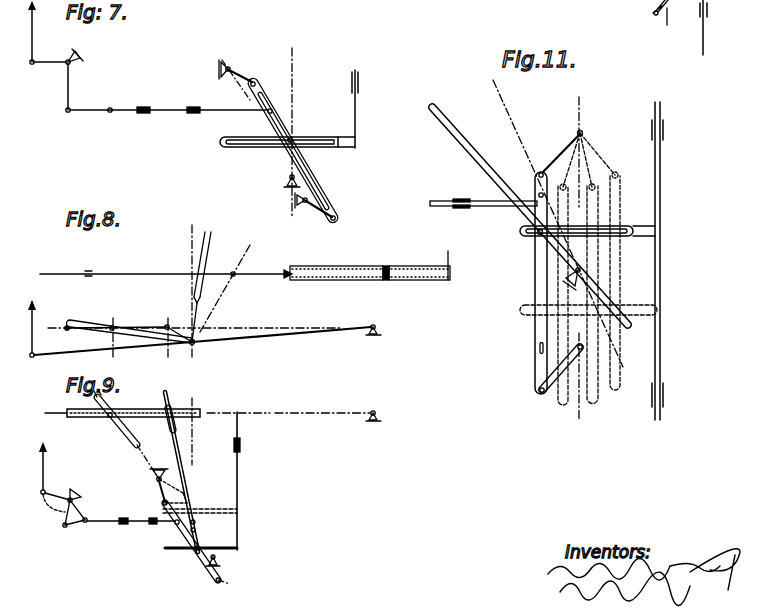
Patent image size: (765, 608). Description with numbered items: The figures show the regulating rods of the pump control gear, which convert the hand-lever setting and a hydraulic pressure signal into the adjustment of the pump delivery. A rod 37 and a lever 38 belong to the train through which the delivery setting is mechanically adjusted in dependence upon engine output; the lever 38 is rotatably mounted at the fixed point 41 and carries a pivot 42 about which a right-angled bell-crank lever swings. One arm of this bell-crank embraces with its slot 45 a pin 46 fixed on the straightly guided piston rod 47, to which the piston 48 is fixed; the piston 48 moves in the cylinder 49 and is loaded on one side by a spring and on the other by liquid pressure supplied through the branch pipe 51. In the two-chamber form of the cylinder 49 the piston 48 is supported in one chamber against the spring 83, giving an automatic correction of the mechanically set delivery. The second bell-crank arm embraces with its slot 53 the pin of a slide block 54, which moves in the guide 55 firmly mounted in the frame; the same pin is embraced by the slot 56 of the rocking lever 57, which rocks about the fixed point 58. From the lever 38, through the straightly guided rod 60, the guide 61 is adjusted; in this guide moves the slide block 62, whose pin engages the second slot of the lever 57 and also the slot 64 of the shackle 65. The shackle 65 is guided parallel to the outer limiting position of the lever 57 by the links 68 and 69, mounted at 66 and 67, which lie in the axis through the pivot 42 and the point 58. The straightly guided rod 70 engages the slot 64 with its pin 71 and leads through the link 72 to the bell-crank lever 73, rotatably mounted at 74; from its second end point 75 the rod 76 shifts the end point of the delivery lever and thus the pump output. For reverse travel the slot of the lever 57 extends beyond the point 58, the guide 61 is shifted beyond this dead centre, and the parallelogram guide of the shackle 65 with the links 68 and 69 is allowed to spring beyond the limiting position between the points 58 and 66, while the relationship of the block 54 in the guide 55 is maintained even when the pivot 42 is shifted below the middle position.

In FIG. 8, the rod 37 is at (40, 328).
In FIG. 8, the lever 38 is at (280, 338).
In FIG. 8, the mounting point 41 is at (380, 332).
In FIG. 9, the mounting point 41 is at (380, 418).
In FIG. 8, the pivot 42 is at (203, 350).
In FIG. 8, the slot 45 is at (203, 257).
In FIG. 8, the pin 46 is at (208, 273).
In FIG. 8, the piston rod 47 is at (166, 266).
In FIG. 8, the piston 48 is at (381, 282).
In FIG. 8, the cylinder 49 is at (336, 280).
In FIG. 8, the branch pipe 51 is at (447, 257).
In FIG. 8, the slot 53 is at (113, 329).
In FIG. 8, the slide block 54 is at (150, 327).
In FIG. 9, the slide block 54 is at (108, 417).
In FIG. 8, the guide 55 is at (70, 331).
In FIG. 9, the guide 55 is at (75, 417).
In FIG. 9, the slot 56 is at (176, 425).
In FIG. 9, the rocking lever 57 is at (146, 460).
In FIG. 11, the rocking lever 57 is at (470, 146).
In FIG. 7, the fixed point 58 is at (289, 177).
In FIG. 9, the fixed point 58 is at (197, 524).
In FIG. 11, the fixed point 58 is at (583, 271).
In FIG. 7, the rod 60 is at (354, 110).
In FIG. 9, the rod 60 is at (237, 462).
In FIG. 11, the rod 60 is at (662, 112).
In FIG. 7, the guide 61 is at (272, 145).
In FIG. 9, the guide 61 is at (226, 547).
In FIG. 11, the guide 61 is at (626, 226).
In FIG. 9, the slide block 62 is at (195, 551).
In FIG. 11, the slide block 62 is at (538, 236).
In FIG. 7, the slot 64 is at (292, 137).
In FIG. 11, the slot 64 is at (535, 344).
In FIG. 7, the shackle 65 is at (330, 206).
In FIG. 9, the shackle 65 is at (214, 580).
In FIG. 11, the shackle 65 is at (538, 383).
In FIG. 7, the mounting point 66 is at (231, 66).
In FIG. 9, the mounting point 66 is at (168, 478).
In FIG. 11, the mounting point 66 is at (583, 133).
In FIG. 7, the mounting point 67 is at (295, 199).
In FIG. 9, the mounting point 67 is at (219, 559).
In FIG. 11, the mounting point 67 is at (581, 351).
In FIG. 7, the link 68 is at (251, 65).
In FIG. 9, the link 68 is at (160, 500).
In FIG. 11, the link 68 is at (570, 143).
In FIG. 7, the link 69 is at (320, 212).
In FIG. 11, the link 69 is at (566, 372).
In FIG. 7, the rod 70 is at (168, 114).
In FIG. 9, the rod 70 is at (133, 523).
In FIG. 11, the rod 70 is at (492, 208).
In FIG. 7, the pin 71 is at (268, 112).
In FIG. 9, the pin 71 is at (174, 524).
In FIG. 11, the pin 71 is at (546, 196).
In FIG. 7, the link 72 is at (92, 114).
In FIG. 9, the link 72 is at (84, 523).
In FIG. 7, the bell-crank lever 73 is at (70, 88).
In FIG. 7, the mounting point 74 is at (82, 56).
In FIG. 7, the end point 75 is at (46, 70).
In FIG. 9, the end point 75 is at (60, 512).
In FIG. 7, the rod 76 is at (40, 31).
In FIG. 9, the rod 76 is at (52, 477).
In FIG. 8, the spring 83 is at (425, 280).